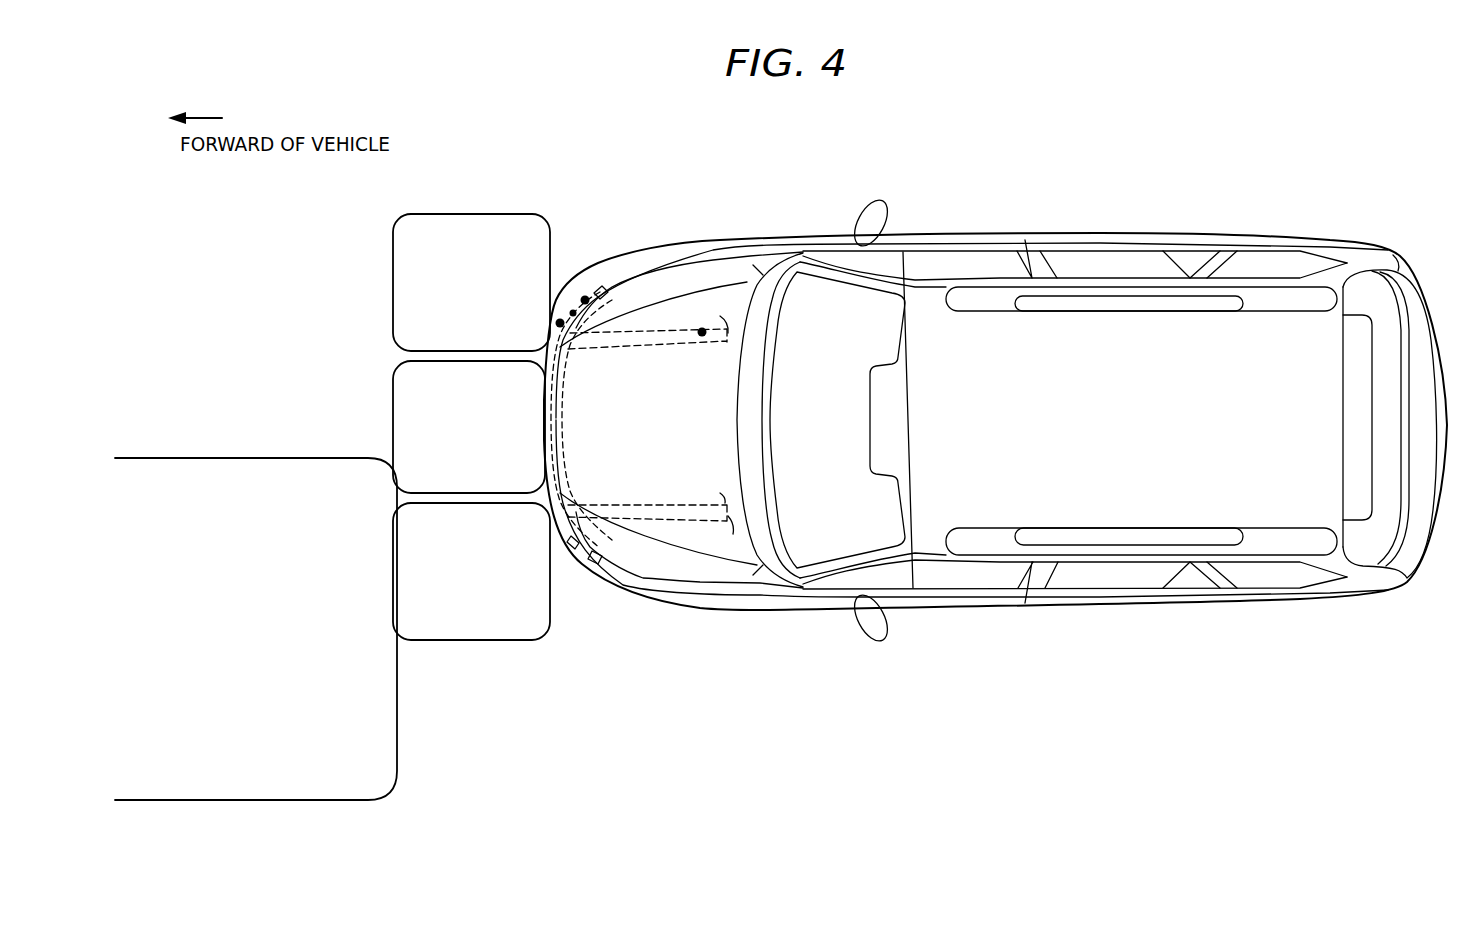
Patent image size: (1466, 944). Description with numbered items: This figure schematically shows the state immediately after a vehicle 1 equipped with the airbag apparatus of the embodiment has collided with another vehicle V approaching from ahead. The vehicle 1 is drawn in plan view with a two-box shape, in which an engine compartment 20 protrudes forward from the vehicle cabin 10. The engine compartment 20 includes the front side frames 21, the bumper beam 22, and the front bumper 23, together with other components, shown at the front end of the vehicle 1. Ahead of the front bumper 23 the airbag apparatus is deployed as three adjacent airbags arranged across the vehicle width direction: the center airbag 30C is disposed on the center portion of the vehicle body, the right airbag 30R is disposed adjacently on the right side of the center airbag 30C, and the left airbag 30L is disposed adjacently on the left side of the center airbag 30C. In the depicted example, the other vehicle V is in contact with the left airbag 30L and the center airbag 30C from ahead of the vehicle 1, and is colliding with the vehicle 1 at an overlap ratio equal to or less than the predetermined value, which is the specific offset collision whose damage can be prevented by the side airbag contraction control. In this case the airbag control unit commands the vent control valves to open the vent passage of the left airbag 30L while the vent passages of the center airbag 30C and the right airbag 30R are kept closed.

The vehicle 1 is at (1361, 206).
The vehicle cabin 10 is at (1097, 212).
The engine compartment 20 is at (678, 215).
The front side frames 21 is at (702, 332).
The bumper beam 22 is at (585, 300).
The front bumper 23 is at (560, 323).
The right airbag 30R is at (395, 262).
The center airbag 30C is at (395, 408).
The left airbag 30L is at (481, 640).
The other vehicle V is at (396, 762).